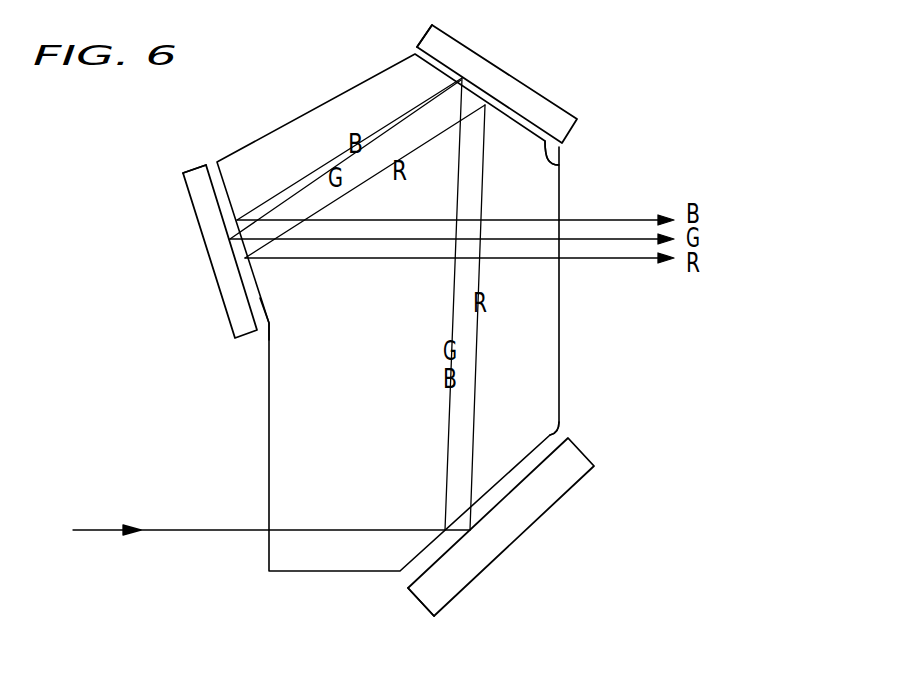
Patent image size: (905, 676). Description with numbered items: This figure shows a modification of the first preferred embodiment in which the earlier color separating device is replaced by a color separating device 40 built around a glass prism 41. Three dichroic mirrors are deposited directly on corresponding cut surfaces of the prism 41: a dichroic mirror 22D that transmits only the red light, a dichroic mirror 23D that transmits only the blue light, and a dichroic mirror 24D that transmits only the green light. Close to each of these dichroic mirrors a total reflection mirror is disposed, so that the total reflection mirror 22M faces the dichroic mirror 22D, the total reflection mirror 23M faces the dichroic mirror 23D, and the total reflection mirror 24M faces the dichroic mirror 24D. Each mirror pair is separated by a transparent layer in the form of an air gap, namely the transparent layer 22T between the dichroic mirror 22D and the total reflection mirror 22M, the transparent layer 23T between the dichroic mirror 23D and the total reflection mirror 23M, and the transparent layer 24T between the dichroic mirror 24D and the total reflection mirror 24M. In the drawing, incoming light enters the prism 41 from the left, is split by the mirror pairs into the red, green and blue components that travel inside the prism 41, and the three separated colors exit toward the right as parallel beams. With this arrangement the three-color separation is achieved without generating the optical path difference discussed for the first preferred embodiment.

The color separating device 40 is at (643, 362).
The glass prism 41 is at (545, 321).
The total reflection mirror 22M is at (498, 502).
The transparent layer 22T is at (420, 563).
The dichroic mirror 22D is at (547, 437).
The total reflection mirror 23M is at (496, 92).
The transparent layer 23T is at (415, 52).
The dichroic mirror 23D is at (560, 170).
The total reflection mirror 24M is at (232, 270).
The transparent layer 24T is at (213, 176).
The dichroic mirror 24D is at (258, 300).